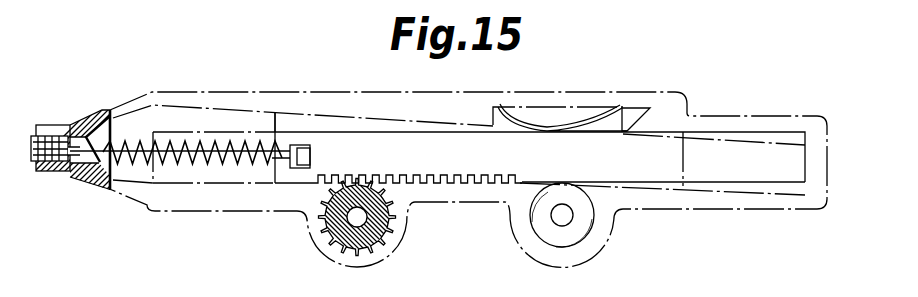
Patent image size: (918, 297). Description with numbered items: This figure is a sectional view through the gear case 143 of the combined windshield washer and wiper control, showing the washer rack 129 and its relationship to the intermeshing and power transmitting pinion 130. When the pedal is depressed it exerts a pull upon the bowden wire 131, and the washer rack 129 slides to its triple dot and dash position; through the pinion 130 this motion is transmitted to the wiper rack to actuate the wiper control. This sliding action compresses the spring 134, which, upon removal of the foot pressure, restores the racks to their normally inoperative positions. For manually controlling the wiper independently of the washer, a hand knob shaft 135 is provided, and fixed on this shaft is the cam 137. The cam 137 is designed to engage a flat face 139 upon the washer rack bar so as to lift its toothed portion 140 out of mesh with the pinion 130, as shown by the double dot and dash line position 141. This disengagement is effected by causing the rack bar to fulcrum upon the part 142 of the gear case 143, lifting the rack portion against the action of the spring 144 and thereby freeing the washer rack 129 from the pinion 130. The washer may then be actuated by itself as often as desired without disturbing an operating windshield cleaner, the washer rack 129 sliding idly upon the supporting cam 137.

The washer rack 129 is at (603, 174).
The intermeshing and power transmitting pinion 130 is at (333, 223).
The bowden wire 131 is at (217, 158).
The spring 134 is at (183, 158).
The hand knob shaft 135 is at (562, 220).
The cam 137 is at (583, 227).
The flat face 139 is at (641, 175).
The toothed portion 140 is at (425, 182).
The double dot and dash line position 141 is at (381, 120).
The part of the gear case 142 is at (650, 108).
The gear case 143 is at (97, 120).
The spring 144 is at (602, 118).